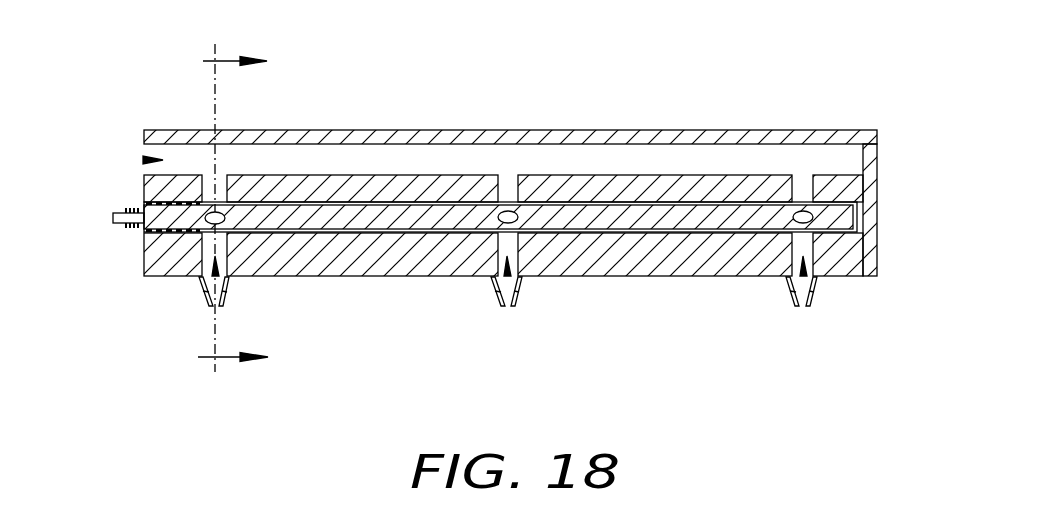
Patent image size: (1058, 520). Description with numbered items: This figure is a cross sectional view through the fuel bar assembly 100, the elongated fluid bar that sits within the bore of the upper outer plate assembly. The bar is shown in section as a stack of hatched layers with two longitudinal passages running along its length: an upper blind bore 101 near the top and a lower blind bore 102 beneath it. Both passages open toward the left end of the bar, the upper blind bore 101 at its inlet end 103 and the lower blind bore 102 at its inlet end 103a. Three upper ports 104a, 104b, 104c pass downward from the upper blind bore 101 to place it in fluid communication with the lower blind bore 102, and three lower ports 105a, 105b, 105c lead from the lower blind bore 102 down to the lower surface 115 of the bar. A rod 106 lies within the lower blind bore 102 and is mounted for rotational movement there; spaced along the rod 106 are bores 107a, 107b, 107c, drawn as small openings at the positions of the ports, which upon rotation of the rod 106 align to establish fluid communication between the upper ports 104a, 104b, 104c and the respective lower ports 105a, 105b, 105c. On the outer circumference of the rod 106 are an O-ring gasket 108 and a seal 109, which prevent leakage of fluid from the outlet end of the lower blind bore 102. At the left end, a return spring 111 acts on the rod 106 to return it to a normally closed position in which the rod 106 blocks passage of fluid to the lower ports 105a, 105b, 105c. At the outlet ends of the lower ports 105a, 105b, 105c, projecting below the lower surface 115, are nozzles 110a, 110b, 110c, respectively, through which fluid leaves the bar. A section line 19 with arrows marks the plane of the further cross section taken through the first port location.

The section line XIX—XIX 19 is at (233, 210).
The fluid bar assembly 100 is at (501, 225).
The upper blind bore 101 is at (677, 153).
The lower blind bore 102 is at (501, 255).
The inlet end 103 is at (142, 201).
The inlet end 103a is at (142, 204).
The upper port 104a is at (217, 172).
The upper port 104b is at (505, 175).
The upper port 104c is at (798, 174).
The lower port 105a is at (225, 295).
The lower port 105b is at (516, 298).
The lower port 105c is at (816, 300).
The rod 106 is at (143, 240).
The bore 107a is at (208, 222).
The bore 107b is at (499, 218).
The bore 107c is at (793, 218).
The O-ring gasket 108 is at (173, 220).
The seal 109 is at (143, 160).
The nozzle 110a is at (202, 298).
The nozzle 110b is at (518, 302).
The nozzle 110c is at (817, 302).
The return spring 111 is at (120, 224).
The lower surface 115 is at (367, 277).